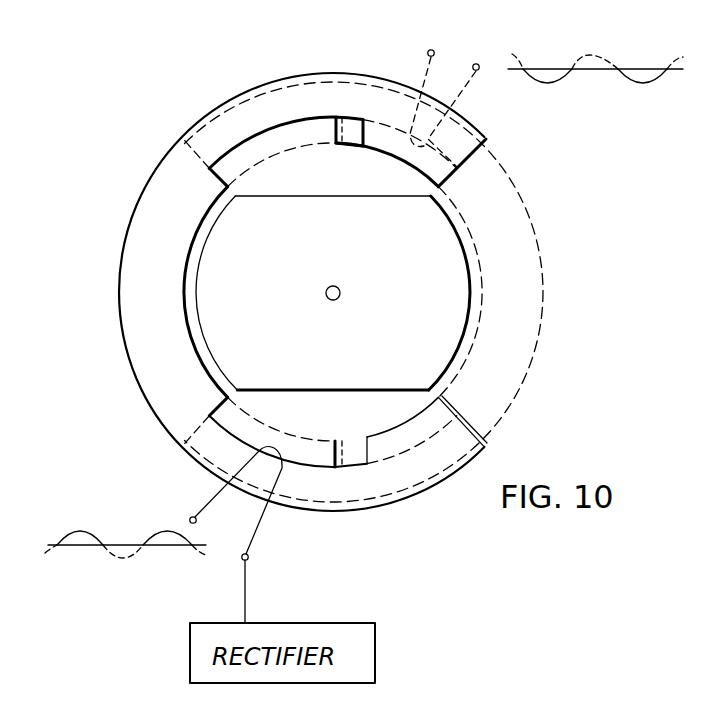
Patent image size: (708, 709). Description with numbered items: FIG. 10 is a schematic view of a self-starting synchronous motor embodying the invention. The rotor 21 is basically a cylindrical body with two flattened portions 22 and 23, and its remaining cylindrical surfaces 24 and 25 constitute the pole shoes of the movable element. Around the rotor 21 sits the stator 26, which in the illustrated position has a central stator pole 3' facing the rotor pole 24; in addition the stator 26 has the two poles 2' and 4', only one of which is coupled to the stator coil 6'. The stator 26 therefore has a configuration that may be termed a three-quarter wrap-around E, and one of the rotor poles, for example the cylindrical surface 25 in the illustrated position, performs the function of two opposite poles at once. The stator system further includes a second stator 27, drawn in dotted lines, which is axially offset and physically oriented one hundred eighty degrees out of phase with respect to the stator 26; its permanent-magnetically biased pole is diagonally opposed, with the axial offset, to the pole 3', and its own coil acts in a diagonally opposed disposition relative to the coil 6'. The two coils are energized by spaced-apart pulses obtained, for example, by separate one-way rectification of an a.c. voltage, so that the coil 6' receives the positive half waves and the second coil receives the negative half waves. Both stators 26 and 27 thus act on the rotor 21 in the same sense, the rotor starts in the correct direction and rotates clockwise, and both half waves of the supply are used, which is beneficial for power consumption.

The stator pole 2' is at (350, 116).
The central stator pole 3' is at (317, 292).
The stator pole 4' is at (364, 494).
The stator coil 6' is at (235, 535).
The rotor 21 is at (329, 295).
The flattened portion 22 is at (364, 194).
The flattened portion 23 is at (368, 394).
The cylindrical surface 24 is at (196, 282).
The cylindrical surface 25 is at (480, 300).
The stator 26 is at (128, 371).
The second stator 27 is at (553, 209).